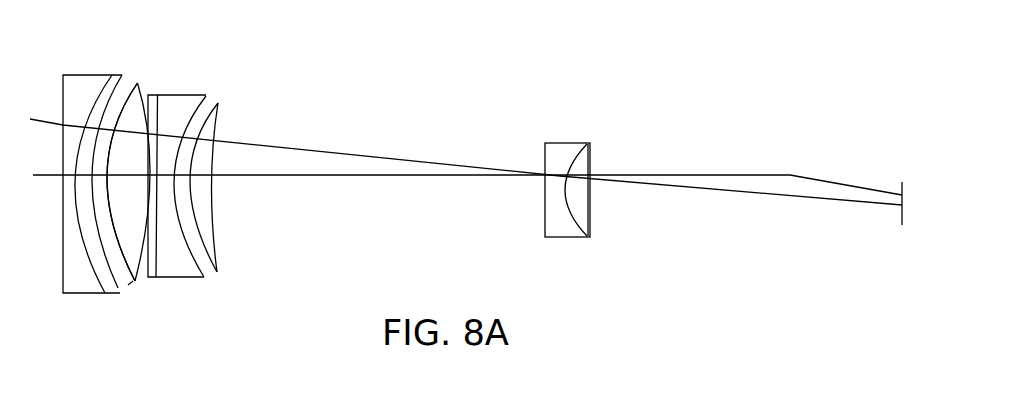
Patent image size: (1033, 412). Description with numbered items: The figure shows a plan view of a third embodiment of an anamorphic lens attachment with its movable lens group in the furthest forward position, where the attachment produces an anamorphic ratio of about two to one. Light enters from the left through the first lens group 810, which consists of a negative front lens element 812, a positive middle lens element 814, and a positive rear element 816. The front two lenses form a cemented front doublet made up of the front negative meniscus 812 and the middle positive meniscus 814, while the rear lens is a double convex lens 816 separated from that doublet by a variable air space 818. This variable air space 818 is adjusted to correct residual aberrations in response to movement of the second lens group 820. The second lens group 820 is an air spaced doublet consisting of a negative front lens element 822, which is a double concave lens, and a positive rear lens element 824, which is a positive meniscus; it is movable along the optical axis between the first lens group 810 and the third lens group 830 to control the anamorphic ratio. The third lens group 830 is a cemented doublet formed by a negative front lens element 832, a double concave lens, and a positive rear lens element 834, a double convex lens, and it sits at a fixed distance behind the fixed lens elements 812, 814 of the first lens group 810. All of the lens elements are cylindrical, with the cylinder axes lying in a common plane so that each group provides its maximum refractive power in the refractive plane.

The first lens group 810 is at (137, 68).
The negative front lens element 812 is at (65, 294).
The positive middle lens element 814 is at (115, 294).
The positive rear lens element 816 is at (137, 282).
The variable air space 818 is at (128, 285).
The second lens group 820 is at (222, 88).
The negative front lens element 822 is at (193, 278).
The positive rear lens element 824 is at (213, 240).
The third lens group 830 is at (597, 138).
The negative front lens element 832 is at (555, 238).
The positive rear lens element 834 is at (592, 223).